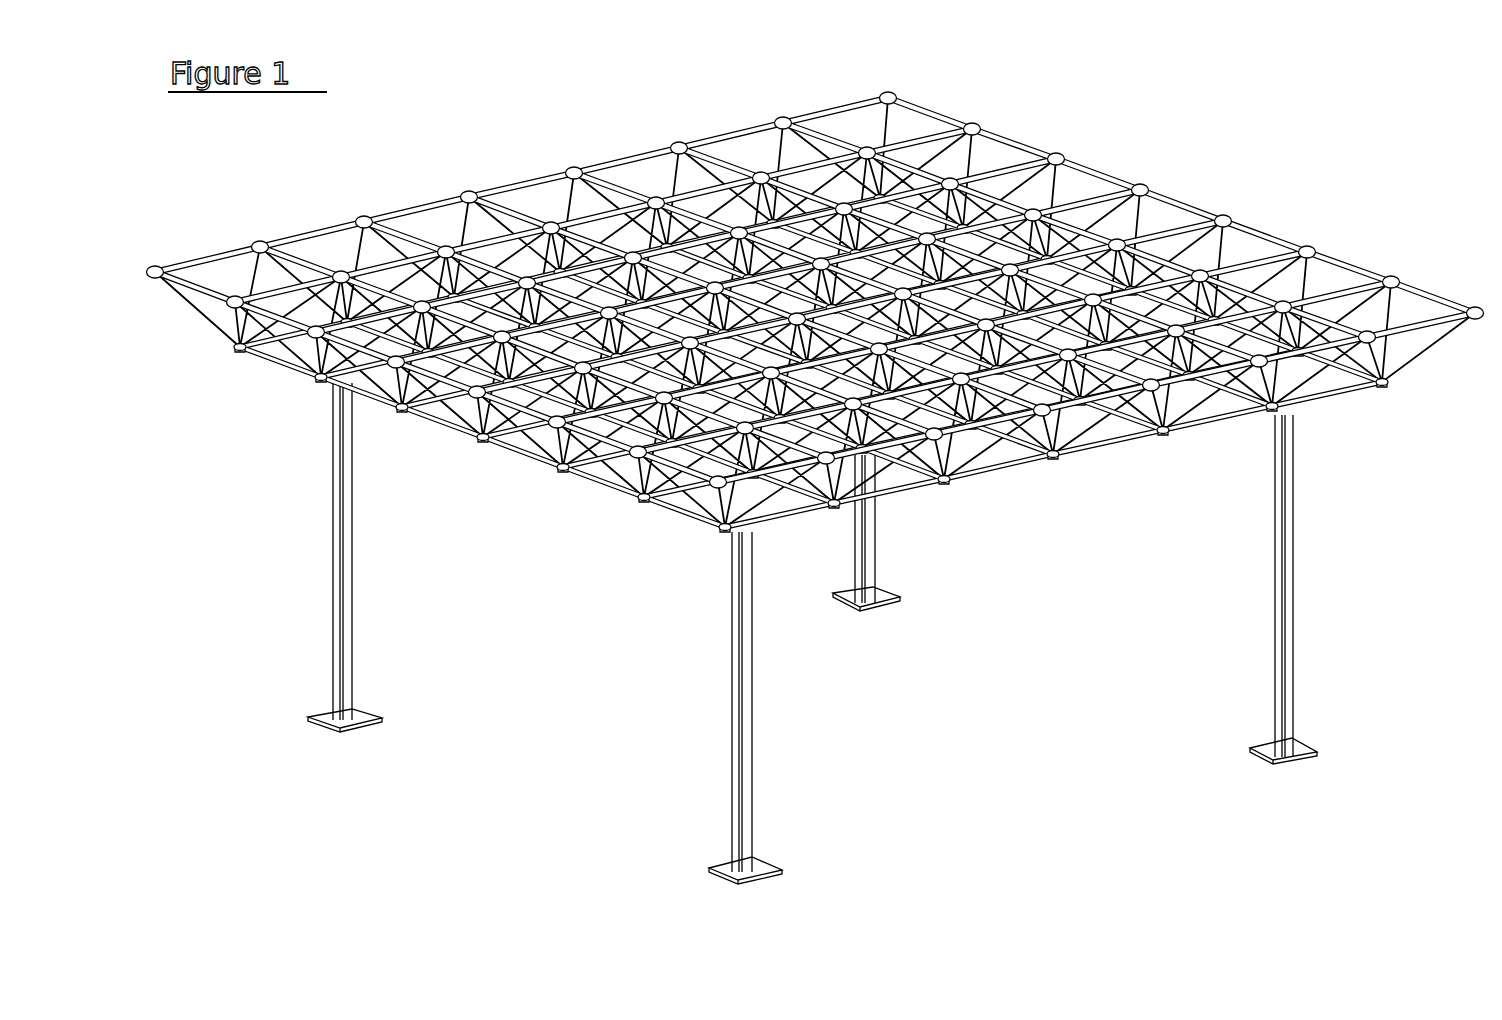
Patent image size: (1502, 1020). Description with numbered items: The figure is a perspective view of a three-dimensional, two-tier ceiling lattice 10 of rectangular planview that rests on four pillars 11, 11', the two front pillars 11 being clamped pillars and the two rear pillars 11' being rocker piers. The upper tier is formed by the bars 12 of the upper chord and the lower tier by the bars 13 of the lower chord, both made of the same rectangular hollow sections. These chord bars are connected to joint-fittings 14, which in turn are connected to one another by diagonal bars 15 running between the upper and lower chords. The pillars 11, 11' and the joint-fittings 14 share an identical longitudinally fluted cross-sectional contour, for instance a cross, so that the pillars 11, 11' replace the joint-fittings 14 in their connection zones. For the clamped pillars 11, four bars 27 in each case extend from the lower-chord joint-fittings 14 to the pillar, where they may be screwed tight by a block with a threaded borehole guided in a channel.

The three-dimensional ceiling lattice 10 is at (815, 322).
The clamped pillars 11 is at (545, 633).
The rocker piers 11' is at (1075, 589).
The bars of the upper chord 12 is at (1325, 272).
The bars of the lower chord 13 is at (613, 483).
The joint-fittings 14 is at (1056, 159).
The diagonal bars 15 is at (490, 437).
The bars 27 is at (340, 382).